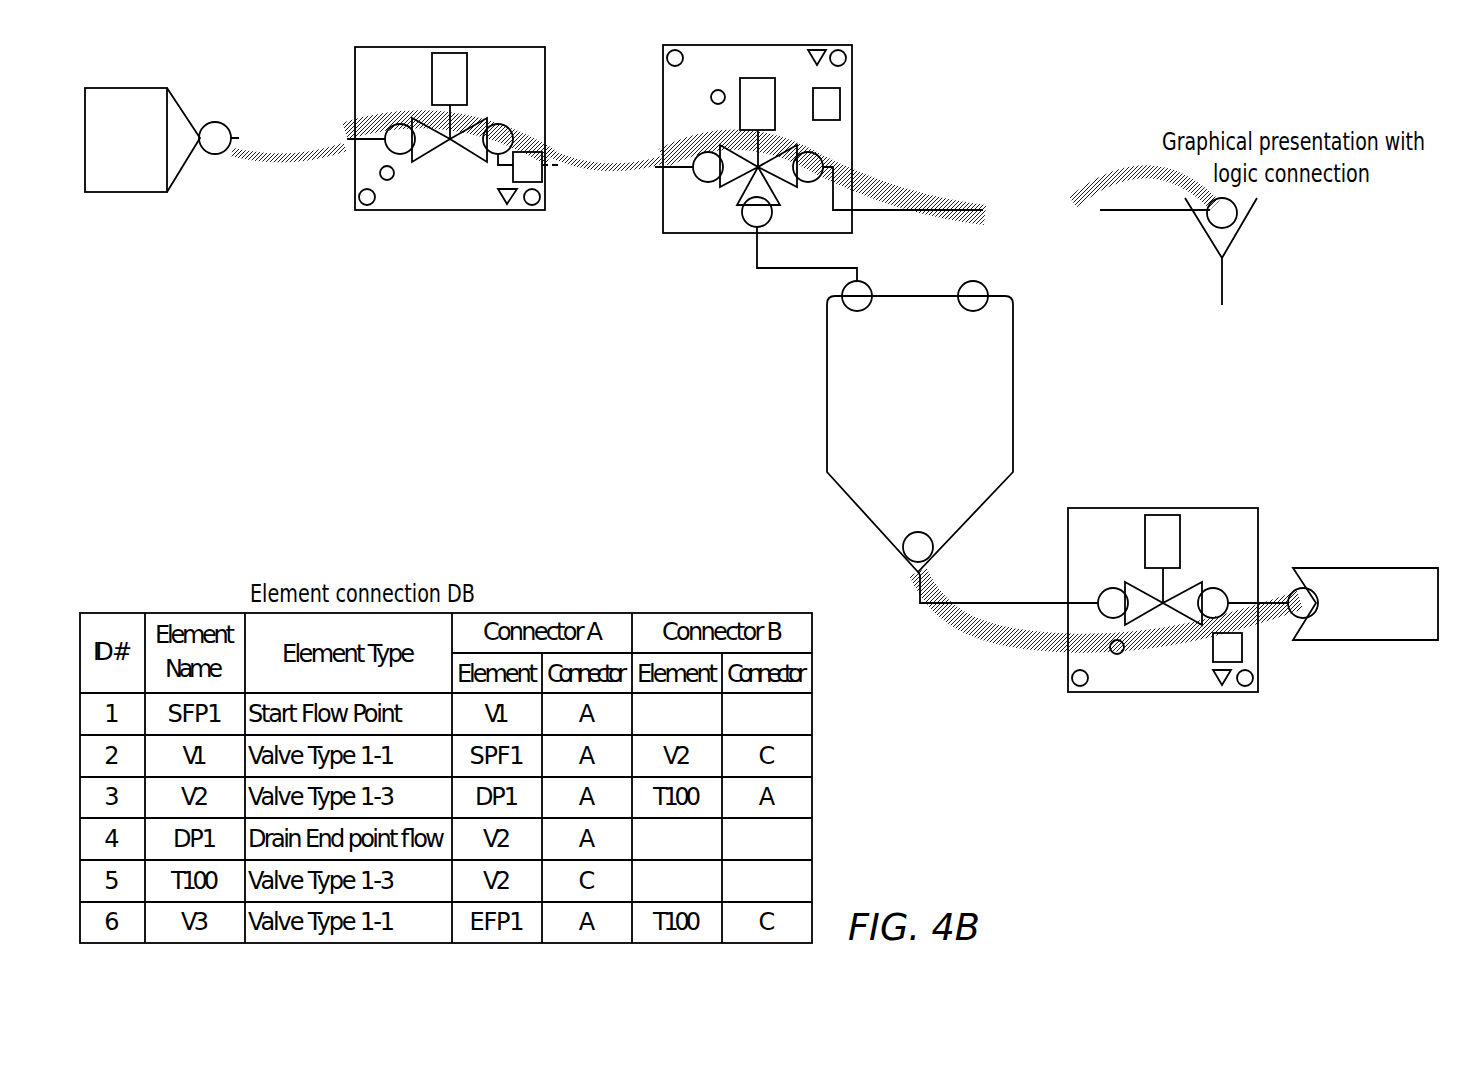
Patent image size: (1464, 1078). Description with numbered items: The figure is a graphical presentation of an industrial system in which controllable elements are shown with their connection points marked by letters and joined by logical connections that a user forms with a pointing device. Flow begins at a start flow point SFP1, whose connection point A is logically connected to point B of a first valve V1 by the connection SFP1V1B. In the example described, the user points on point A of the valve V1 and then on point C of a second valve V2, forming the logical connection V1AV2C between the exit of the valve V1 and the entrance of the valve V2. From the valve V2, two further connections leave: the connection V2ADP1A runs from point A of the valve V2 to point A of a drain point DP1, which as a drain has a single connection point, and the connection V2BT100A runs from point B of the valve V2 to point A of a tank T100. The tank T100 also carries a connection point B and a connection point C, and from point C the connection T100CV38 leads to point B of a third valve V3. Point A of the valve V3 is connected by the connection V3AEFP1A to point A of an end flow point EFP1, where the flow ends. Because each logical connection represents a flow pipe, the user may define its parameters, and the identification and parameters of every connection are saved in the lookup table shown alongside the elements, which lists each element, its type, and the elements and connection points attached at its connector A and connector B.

The start flow point SFP1 is at (158, 156).
The valve V1 is at (450, 143).
The valve V2 is at (757, 155).
The drain point DP1 is at (1220, 268).
The tank T100 is at (920, 426).
The valve type 1-1 V3 is at (1163, 615).
The end flow point EFP1 is at (1363, 622).
The connection from SFP1 A to V1 B SFP1V1B is at (308, 137).
The connection from V1 A to V2 C V1AV2C is at (617, 155).
The connection from V2 A to DP1 A V2ADP1A is at (1016, 196).
The connection from V2 B to T100 A V2BT100A is at (785, 264).
The connection from T100 C to V3 B T100CV38 is at (984, 605).
The connection from V3 A to EFP1 A V3AEFP1A is at (1276, 617).